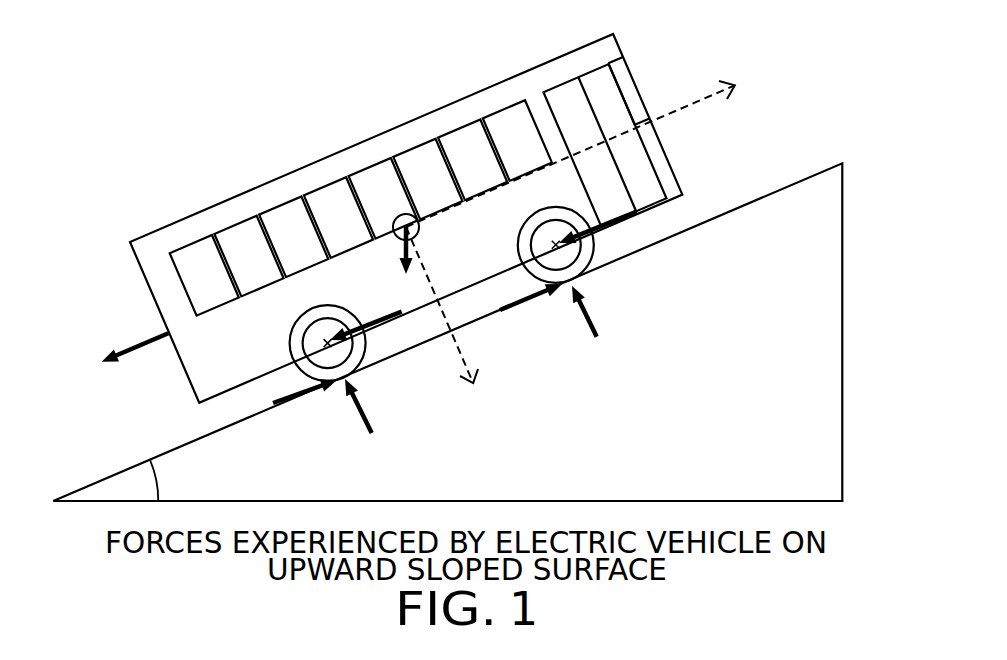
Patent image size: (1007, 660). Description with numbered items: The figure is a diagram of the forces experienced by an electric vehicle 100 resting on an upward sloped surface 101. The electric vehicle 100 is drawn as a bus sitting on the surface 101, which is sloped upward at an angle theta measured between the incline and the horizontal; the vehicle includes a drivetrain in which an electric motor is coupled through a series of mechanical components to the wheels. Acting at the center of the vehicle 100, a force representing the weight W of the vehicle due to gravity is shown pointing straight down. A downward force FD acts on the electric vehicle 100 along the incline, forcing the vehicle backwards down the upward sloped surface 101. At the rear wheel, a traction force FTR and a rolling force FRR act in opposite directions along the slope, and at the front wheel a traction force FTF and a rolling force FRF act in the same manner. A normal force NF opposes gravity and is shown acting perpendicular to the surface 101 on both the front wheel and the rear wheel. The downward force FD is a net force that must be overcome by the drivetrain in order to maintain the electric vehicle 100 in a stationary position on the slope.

The electric vehicle 100 is at (276, 124).
The upward sloped surface 101 is at (802, 180).
The weight W is at (401, 244).
The downward force FD is at (135, 340).
The rolling force FRR is at (366, 314).
The traction force FTR is at (302, 388).
The normal force NF is at (483, 369).
The rolling force FRF is at (598, 219).
The traction force FTF is at (529, 294).
The angle theta is at (167, 480).